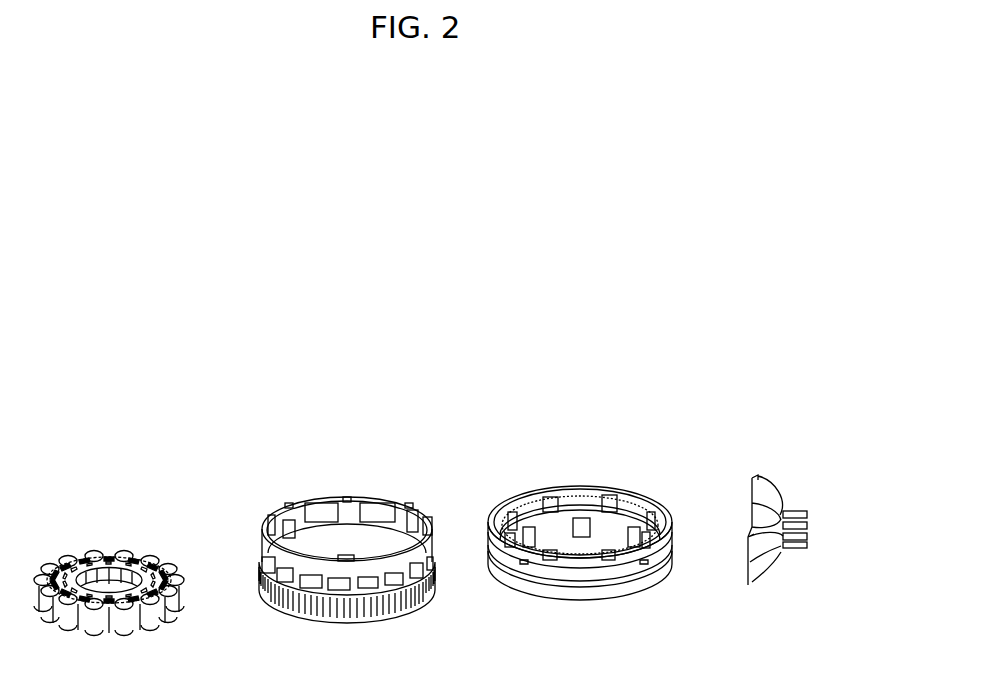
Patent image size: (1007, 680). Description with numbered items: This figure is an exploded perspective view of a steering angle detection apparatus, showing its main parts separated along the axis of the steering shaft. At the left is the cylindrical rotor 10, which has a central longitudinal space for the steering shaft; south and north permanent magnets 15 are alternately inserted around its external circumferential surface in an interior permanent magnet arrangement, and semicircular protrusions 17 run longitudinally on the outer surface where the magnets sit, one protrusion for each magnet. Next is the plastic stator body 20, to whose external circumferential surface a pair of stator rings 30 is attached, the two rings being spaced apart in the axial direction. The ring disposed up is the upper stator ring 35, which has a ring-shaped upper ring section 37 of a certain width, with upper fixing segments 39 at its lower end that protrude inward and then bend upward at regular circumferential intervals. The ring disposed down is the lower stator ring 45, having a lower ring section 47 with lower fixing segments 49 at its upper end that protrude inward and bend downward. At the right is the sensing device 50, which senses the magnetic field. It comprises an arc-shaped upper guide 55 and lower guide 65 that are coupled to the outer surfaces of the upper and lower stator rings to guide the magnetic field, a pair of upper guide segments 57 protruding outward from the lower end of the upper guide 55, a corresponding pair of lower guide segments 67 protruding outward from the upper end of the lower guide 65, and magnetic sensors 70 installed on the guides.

The rotor 10 is at (125, 532).
The permanent magnets 15 is at (152, 566).
The protrusions 17 is at (93, 624).
The stator body 20 is at (367, 475).
The stator rings 30 is at (588, 467).
The upper stator ring 35 is at (662, 435).
The upper ring section 37 is at (640, 505).
The upper fixing segments 39 is at (607, 497).
The lower stator ring 45 is at (612, 641).
The lower ring section 47 is at (603, 597).
The lower fixing segments 49 is at (578, 534).
The sensing device 50 is at (743, 472).
The upper guide 55 is at (768, 497).
The upper guide segments 57 is at (795, 515).
The lower guide 65 is at (761, 575).
The lower guide segments 67 is at (793, 549).
The magnetic sensors 70 is at (750, 538).